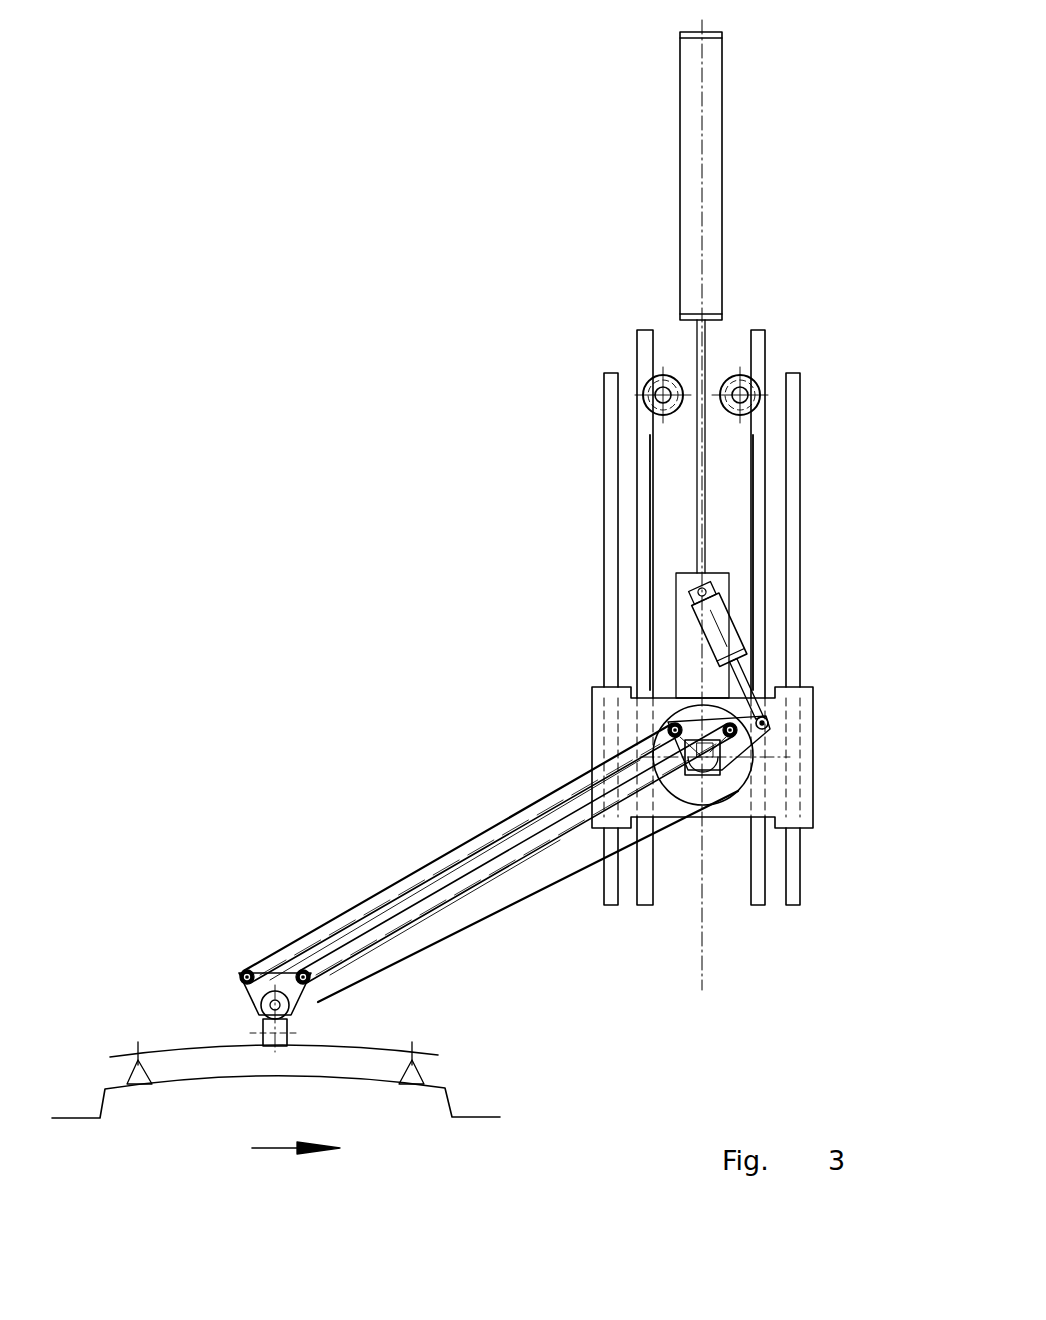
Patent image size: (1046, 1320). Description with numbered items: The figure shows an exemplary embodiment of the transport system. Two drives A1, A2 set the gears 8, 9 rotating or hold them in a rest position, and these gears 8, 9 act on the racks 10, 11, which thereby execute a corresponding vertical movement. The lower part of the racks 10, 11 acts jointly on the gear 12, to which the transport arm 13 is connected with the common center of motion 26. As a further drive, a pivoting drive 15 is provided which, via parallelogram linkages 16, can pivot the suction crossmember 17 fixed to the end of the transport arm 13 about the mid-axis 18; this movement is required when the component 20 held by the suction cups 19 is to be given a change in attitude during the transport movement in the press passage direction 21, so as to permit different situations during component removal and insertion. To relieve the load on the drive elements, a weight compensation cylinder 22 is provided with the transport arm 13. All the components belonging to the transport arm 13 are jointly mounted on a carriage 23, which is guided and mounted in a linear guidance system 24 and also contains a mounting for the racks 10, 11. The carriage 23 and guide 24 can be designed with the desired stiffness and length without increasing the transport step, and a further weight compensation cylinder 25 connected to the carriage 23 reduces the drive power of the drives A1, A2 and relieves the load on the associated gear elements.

The weight compensation cylinder 25 is at (690, 117).
The drive A1 is at (655, 382).
The drive A2 is at (752, 382).
The gear 8 is at (652, 413).
The gear 9 is at (757, 415).
The rack 10 is at (640, 502).
The rack 11 is at (762, 545).
The linear guidance system 24 is at (597, 693).
The carriage 23 is at (600, 737).
The weight compensation cylinder 22 is at (706, 633).
The center of motion 26 is at (775, 748).
The gear 12 is at (740, 786).
The pivoting drive 15 is at (718, 777).
The transport arm 13 is at (488, 900).
The parallelogram linkages 16 is at (273, 970).
The mid-axis 18 is at (247, 997).
The suction crossmember 17 is at (263, 1025).
The suction cups 19 is at (417, 1075).
The component 20 is at (475, 1115).
The press passage direction 21 is at (274, 1148).